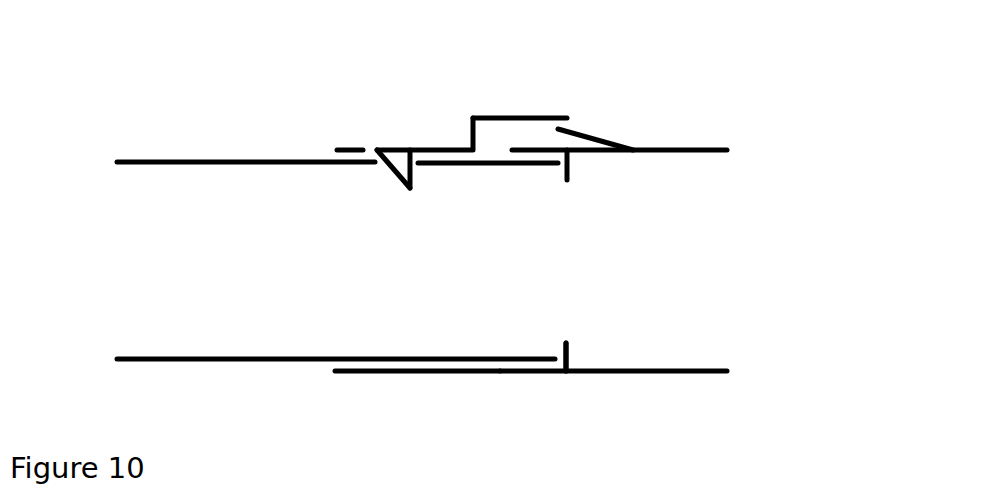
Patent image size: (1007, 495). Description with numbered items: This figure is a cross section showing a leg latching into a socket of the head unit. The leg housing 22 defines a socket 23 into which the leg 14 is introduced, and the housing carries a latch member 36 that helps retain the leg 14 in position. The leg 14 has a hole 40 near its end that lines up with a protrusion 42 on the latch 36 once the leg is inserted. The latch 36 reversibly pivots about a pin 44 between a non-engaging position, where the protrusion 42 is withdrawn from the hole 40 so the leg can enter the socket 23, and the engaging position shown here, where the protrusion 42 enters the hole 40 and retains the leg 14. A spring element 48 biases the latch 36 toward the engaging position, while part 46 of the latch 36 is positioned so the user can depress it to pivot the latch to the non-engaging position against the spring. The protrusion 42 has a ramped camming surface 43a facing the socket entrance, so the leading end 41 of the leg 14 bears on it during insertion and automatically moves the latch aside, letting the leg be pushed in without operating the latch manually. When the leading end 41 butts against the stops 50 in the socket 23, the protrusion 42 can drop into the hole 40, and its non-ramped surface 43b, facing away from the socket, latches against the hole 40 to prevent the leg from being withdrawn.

The leg 14 is at (175, 362).
The leg housing 22 is at (638, 375).
The socket 23 is at (310, 370).
The latch member 36 is at (493, 95).
The hole 40 is at (382, 168).
The leading end 41 is at (550, 350).
The protrusion 42 is at (395, 158).
The ramped camming surface 43a is at (393, 183).
The non-ramped surface 43b is at (417, 177).
The pin 44 is at (468, 138).
The part of the latch 46 is at (550, 110).
The spring element 48 is at (617, 133).
The stops 50 is at (573, 352).